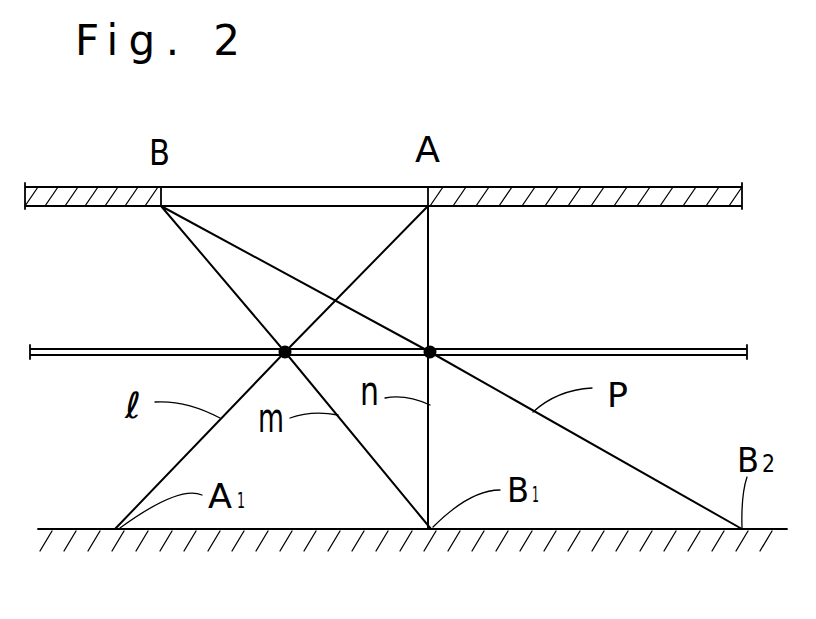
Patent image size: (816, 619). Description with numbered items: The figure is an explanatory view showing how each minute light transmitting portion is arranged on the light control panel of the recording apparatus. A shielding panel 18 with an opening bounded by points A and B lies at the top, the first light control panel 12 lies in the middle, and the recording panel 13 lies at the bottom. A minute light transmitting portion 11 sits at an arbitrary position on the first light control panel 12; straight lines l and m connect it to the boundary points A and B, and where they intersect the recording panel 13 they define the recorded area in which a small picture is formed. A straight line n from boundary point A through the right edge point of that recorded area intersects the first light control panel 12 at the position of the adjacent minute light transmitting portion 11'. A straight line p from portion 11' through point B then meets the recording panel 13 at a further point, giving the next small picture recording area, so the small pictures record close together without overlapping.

The shielding panel 18 is at (568, 193).
The first light control panel 12 is at (560, 348).
The recording panel 13 is at (100, 541).
The minute light transmitting portion 11 is at (218, 325).
The minute light transmitting portion 11' is at (483, 312).